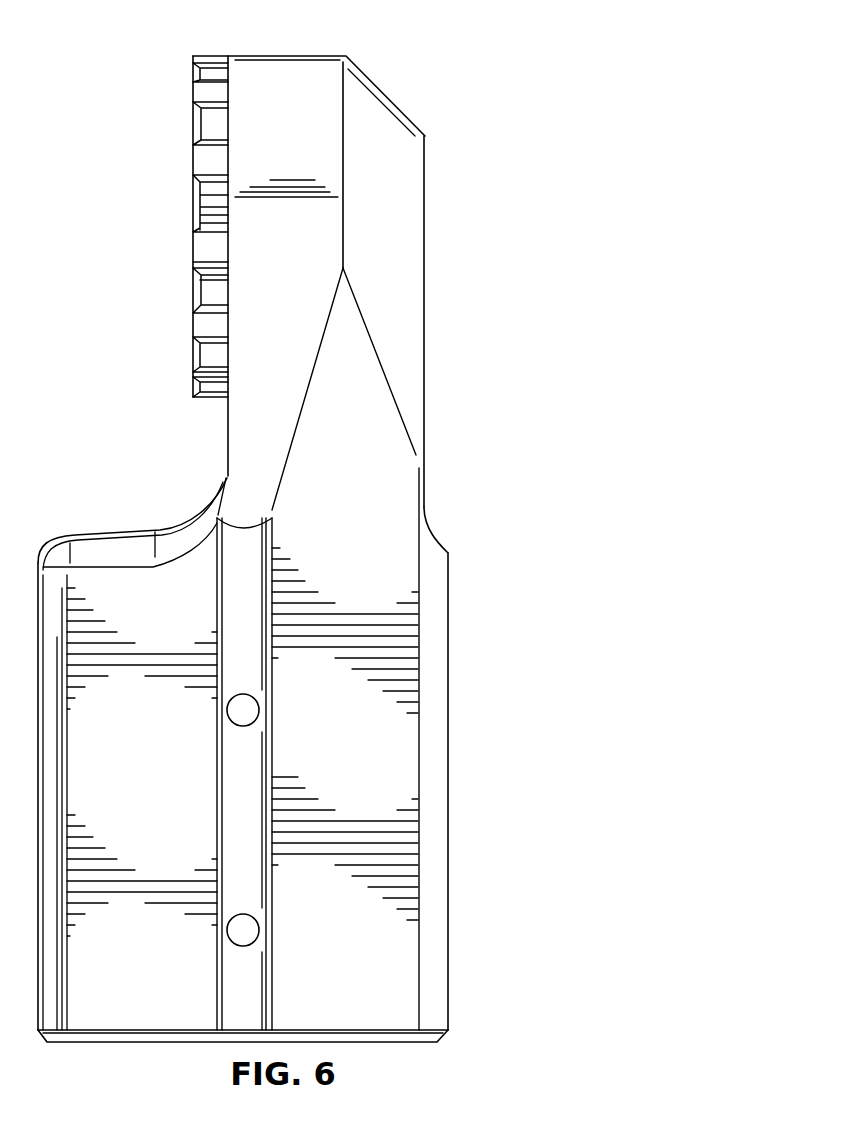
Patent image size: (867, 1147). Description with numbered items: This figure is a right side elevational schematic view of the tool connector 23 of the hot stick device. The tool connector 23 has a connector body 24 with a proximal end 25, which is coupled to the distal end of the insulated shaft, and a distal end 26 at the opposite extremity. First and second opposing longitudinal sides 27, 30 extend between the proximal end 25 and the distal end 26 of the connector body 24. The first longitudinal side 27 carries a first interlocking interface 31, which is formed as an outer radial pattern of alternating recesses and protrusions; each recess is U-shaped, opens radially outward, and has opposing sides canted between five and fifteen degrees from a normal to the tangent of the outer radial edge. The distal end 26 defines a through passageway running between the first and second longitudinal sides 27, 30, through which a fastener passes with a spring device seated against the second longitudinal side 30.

The tool connector 23 is at (472, 95).
The connector body 24 is at (440, 442).
The proximal end 25 is at (430, 745).
The distal end 26 is at (410, 262).
The first longitudinal side 27 is at (190, 530).
The second longitudinal side 30 is at (437, 580).
The first interlocking interface 31 is at (193, 198).